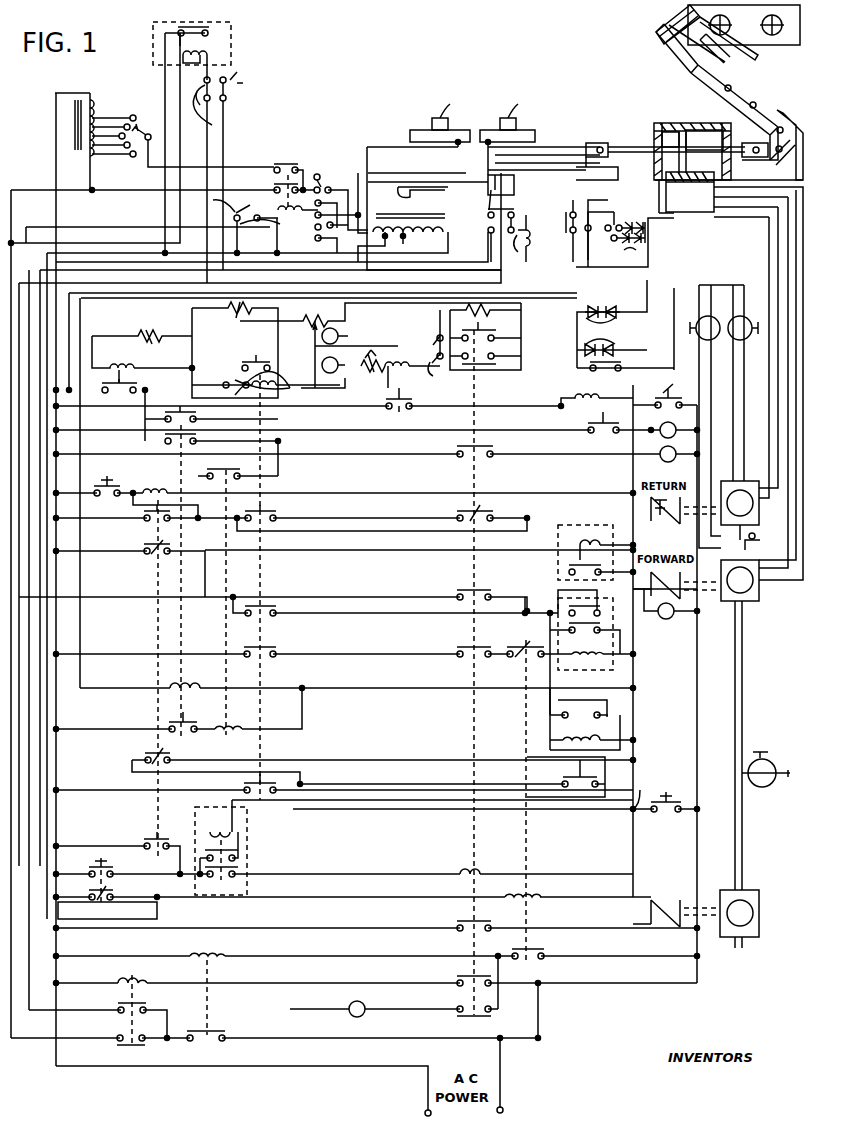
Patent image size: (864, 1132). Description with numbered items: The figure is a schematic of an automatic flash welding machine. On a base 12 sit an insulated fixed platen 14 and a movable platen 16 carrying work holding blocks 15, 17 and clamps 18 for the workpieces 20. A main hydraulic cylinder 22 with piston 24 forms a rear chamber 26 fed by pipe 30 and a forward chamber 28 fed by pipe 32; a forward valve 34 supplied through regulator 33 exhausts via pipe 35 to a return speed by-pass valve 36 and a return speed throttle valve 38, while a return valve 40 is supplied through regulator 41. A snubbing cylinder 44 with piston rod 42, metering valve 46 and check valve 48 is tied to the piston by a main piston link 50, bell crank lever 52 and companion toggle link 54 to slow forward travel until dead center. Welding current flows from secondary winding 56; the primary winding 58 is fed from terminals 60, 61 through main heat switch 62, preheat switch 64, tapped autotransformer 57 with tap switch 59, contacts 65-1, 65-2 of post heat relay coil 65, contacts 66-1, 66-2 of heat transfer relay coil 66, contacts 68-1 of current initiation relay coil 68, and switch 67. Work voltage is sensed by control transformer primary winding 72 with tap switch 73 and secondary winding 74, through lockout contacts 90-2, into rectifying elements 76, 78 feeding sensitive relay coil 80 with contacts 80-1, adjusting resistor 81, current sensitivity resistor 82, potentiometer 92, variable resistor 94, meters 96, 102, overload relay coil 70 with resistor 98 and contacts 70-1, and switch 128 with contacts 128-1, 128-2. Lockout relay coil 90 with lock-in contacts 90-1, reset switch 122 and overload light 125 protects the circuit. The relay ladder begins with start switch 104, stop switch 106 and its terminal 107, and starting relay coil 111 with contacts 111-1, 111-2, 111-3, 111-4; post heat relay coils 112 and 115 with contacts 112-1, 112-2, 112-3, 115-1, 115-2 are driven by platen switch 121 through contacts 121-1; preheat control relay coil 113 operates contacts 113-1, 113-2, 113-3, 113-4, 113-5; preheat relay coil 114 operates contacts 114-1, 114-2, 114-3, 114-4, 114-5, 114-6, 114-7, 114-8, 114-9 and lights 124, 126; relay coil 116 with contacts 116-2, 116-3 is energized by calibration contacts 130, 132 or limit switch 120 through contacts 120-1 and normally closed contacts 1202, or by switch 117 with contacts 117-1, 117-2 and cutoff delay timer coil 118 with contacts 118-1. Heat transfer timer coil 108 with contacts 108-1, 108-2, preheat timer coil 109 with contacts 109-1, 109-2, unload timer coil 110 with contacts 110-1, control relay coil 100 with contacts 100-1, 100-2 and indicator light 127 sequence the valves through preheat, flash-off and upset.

The base 12 is at (596, 284).
The insulated fixed platen 14 is at (403, 150).
The work holding block 15 is at (440, 133).
The movable platen 16 is at (545, 150).
The work holding block 17 is at (512, 133).
The clamps 18 is at (481, 105).
The workpieces 20 is at (473, 127).
The main hydraulic cylinder 22 is at (656, 124).
The piston 24 is at (660, 156).
The rear chamber 26 is at (710, 128).
The forward chamber 28 is at (660, 138).
The pipe 30 is at (690, 196).
The pipe 32 is at (768, 436).
The regulator 33 is at (700, 335).
The forward hydraulic valve 34 is at (746, 600).
The pipe 35 is at (742, 660).
The return speed by-pass valve 36 is at (759, 910).
The return speed throttle valve 38 is at (760, 780).
The return hydraulic valve 40 is at (744, 482).
The regulator 41 is at (746, 336).
The piston rod 42 is at (728, 66).
The snubbing cylinder 44 is at (660, 22).
The metering valve 46 is at (744, 25).
The check valve 48 is at (778, 25).
The main piston link 50 is at (755, 157).
The bell crank lever 52 is at (765, 108).
The companion toggle link 54 is at (748, 90).
The secondary winding 56 is at (400, 195).
The tapped autotransformer 57 is at (95, 141).
The primary winding 58 is at (426, 225).
The tap switch 59 is at (136, 131).
The power terminal 60 is at (425, 1114).
The power terminal 61 is at (498, 1111).
The main heat switch 62 is at (320, 175).
The preheat switch 64 is at (280, 226).
The post heat relay coil 65 is at (283, 208).
The normally closed contacts 65-1 is at (290, 165).
The normally open contacts 65-2 is at (284, 185).
The heat transfer relay coil 66 is at (138, 978).
The main heat contacts 66-1 is at (133, 1046).
The preheat contacts 66-2 is at (140, 1003).
The single pole single throw switch 67 is at (217, 204).
The current initiation relay coil 68 is at (225, 952).
The current initiation contacts 68-1 is at (208, 1030).
The overload relay coil 70 is at (392, 362).
The overload relay contacts 70-1 is at (402, 410).
The control transformer primary winding 72 is at (634, 258).
The tap switch 73 is at (608, 238).
The control transformer secondary winding 74 is at (632, 224).
The rectifying elements 76 is at (613, 340).
The rectifying elements 78 is at (613, 320).
The sensitive D.C. relay coil 80 is at (120, 365).
The sensitive relay contacts 80-1 is at (130, 384).
The adjusting resistor 81 is at (142, 328).
The current sensitivity resistor 82 is at (235, 348).
The lockout relay coil 90 is at (575, 400).
The lock-in contacts 90-1 is at (595, 427).
The normally closed contacts 90-2 is at (590, 372).
The voltage sensitivity potentiometer 92 is at (338, 312).
The variable resistor 94 is at (470, 318).
The voltage sensitivity meter 96 is at (355, 354).
The adjusting resistor 98 is at (373, 367).
The control relay coil 100 is at (585, 740).
The normally open contacts 100-1 is at (578, 774).
The normally open contacts 100-2 is at (590, 700).
The current sensitivity meter 102 is at (323, 372).
The start switch 104 is at (105, 488).
The stop switch 106 is at (666, 803).
The stop switch terminal 107 is at (652, 782).
The heat transfer timer coil 108 is at (215, 828).
The normally closed timer contacts 108-1 is at (235, 868).
The normally open timer contacts 108-2 is at (230, 848).
The preheat timer coil 109 is at (605, 650).
The normally closed timer contacts 109-1 is at (580, 606).
The normally open timer contacts 109-2 is at (555, 624).
The unload timer coil 110 is at (575, 560).
The normally closed timer contacts 110-1 is at (570, 566).
The starting relay coil 111 is at (152, 488).
The lock-in contacts 111-1 is at (146, 514).
The normally open contacts 111-2 is at (158, 836).
The normally open contacts 111-3 is at (165, 544).
The normally closed contacts 111-4 is at (155, 752).
The post heat relay coil 112 is at (183, 685).
The normally open contacts 112-1 is at (168, 414).
The normally open contacts 112-2 is at (168, 436).
The normally open contacts 112-3 is at (175, 718).
The preheat control relay coil 113 is at (255, 380).
The normally open contacts 113-1 is at (270, 511).
The normally open contacts 113-2 is at (260, 605).
The normally open contacts 113-3 is at (262, 780).
The normally closed contacts 113-4 is at (248, 362).
The normally closed contacts 113-5 is at (262, 647).
The preheat relay coil 114 is at (472, 868).
The normally open contacts 114-1 is at (500, 330).
The contacts 114-2 is at (470, 647).
The normally open contacts 114-3 is at (470, 976).
The normally closed contacts 114-4 is at (480, 511).
The normally open contacts 114-5 is at (470, 590).
The normally open contacts 114-6 is at (470, 921).
The normally open contact 114-7 is at (485, 446).
The normally closed contacts 114-8 is at (468, 1016).
The normally closed contacts 114-9 is at (500, 360).
The post heat relay coil 115 is at (230, 725).
The normally closed contacts 115-1 is at (260, 398).
The normally closed contacts 115-2 is at (219, 471).
The relay coil 116 is at (538, 893).
The normally open contacts 116-2 is at (530, 949).
The normally open contacts 116-3 is at (522, 654).
The switch 117 is at (238, 88).
The switch contacts 117-1 is at (236, 100).
The switch contacts 117-2 is at (214, 126).
The current cutoff delay timer coil 118 is at (205, 38).
The timer contacts 118-1 is at (205, 27).
The platen actuated double pole limit switch 120 is at (538, 238).
The normally open limit switch contacts 120-1 is at (529, 251).
The platen actuated single pole switch 121 is at (593, 230).
The relay contact 121-1 is at (569, 224).
The reset switch 122 is at (666, 391).
The main heat indicator light 124 is at (350, 1015).
The overload indicator light 125 is at (664, 435).
The preheat indicator light 126 is at (664, 459).
The indicator light 127 is at (658, 618).
The single pole double throw switch 128 is at (422, 347).
The low preheat contacts 128-1 is at (437, 330).
The high preheat contacts 128-2 is at (461, 369).
The calibration switch contacts 130 is at (106, 890).
The calibration switch contacts 132 is at (119, 863).
The relay contact 1202 is at (492, 212).